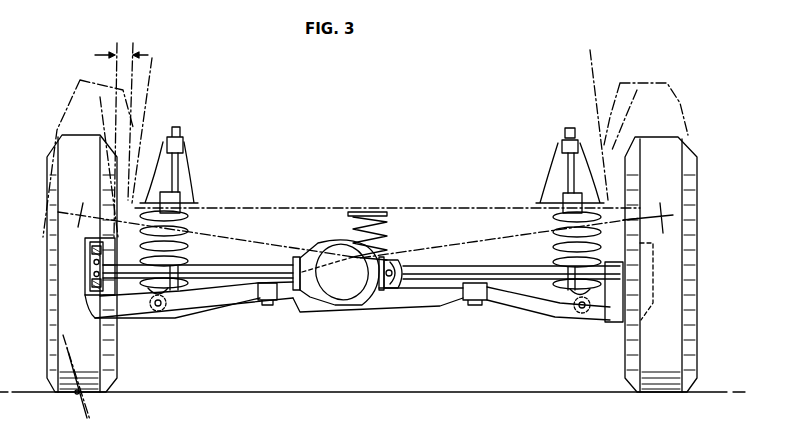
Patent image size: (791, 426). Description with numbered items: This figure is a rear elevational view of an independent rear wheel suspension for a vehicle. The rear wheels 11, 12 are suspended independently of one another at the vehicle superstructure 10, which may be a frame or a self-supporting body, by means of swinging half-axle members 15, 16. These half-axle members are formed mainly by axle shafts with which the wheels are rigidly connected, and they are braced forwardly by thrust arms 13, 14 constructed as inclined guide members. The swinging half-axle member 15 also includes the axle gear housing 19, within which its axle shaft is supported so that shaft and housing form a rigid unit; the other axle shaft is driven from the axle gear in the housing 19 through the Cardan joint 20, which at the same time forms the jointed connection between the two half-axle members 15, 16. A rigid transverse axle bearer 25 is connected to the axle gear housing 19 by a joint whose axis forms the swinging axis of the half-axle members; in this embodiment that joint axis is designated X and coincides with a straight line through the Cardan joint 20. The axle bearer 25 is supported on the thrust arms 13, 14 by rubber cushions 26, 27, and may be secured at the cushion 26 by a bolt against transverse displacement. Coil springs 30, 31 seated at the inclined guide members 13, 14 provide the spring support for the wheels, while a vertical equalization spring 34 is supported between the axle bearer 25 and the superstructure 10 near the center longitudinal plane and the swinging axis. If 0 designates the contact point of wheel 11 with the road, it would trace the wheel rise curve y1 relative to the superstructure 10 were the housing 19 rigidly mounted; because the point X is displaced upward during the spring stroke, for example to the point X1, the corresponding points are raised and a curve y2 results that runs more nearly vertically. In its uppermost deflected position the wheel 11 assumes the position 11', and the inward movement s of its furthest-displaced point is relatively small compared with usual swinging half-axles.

The vehicle superstructure 10 is at (150, 80).
The rear wheel 11 is at (102, 263).
The upwardly deflected wheel position 11' is at (83, 150).
The rear wheel 12 is at (655, 355).
The thrust arm 13 is at (200, 300).
The thrust arm 14 is at (545, 306).
The swinging half-axle member 15 is at (228, 272).
The swinging half-axle member 16 is at (498, 276).
The axle gear housing 19 is at (333, 307).
The Cardan joint 20 is at (390, 298).
The axle bearer 25 is at (420, 305).
The rubber cushion 26 is at (270, 303).
The rubber cushion 27 is at (475, 303).
The coil spring 30 is at (188, 251).
The coil spring 31 is at (555, 230).
The equalization spring 34 is at (372, 210).
The joint axis X is at (400, 267).
The displaced joint axis point X1 is at (390, 262).
The wheel rise curve y1 is at (60, 353).
The resulting wheel rise curve y2 is at (70, 348).
The inward movement amount s is at (121, 140).
The point of contact 0 is at (77, 393).